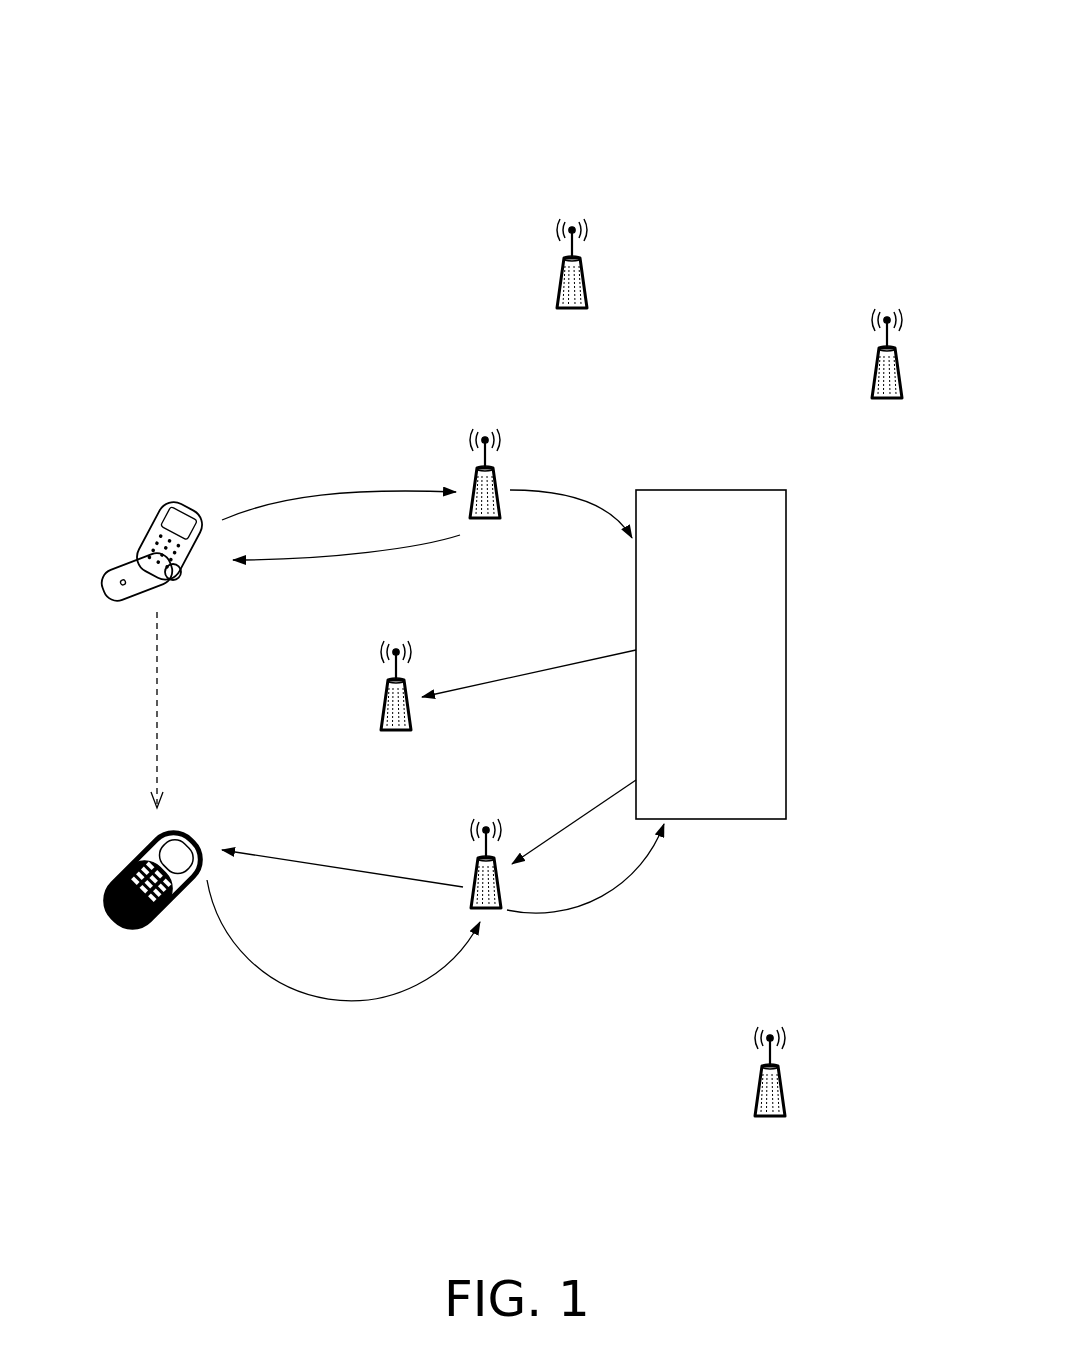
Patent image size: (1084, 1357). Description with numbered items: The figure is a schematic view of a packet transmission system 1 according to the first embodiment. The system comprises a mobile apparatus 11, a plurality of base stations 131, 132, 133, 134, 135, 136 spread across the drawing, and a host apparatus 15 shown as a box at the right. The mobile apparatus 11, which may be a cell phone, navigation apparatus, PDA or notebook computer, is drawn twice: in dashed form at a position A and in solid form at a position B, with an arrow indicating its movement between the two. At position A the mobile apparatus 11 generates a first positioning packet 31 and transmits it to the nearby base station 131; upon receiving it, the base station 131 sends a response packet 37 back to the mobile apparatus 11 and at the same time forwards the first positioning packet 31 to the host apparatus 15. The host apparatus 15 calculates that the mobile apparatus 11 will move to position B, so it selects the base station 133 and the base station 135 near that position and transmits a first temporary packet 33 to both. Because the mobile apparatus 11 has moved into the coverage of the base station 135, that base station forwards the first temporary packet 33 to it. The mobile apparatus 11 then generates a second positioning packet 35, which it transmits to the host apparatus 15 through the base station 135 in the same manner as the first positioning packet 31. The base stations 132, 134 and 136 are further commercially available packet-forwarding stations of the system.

The packet transmission system 1 is at (393, 132).
The mobile apparatus 11 is at (158, 524).
The host apparatus 15 is at (695, 490).
The first positioning packet 31 is at (360, 480).
The first temporary packet 33 is at (543, 655).
The second positioning packet 35 is at (338, 1015).
The response packet 37 is at (355, 545).
The base station 131 is at (478, 522).
The base station 132 is at (588, 288).
The base station 133 is at (398, 732).
The base station 134 is at (876, 366).
The base station 135 is at (497, 912).
The base station 136 is at (786, 1096).